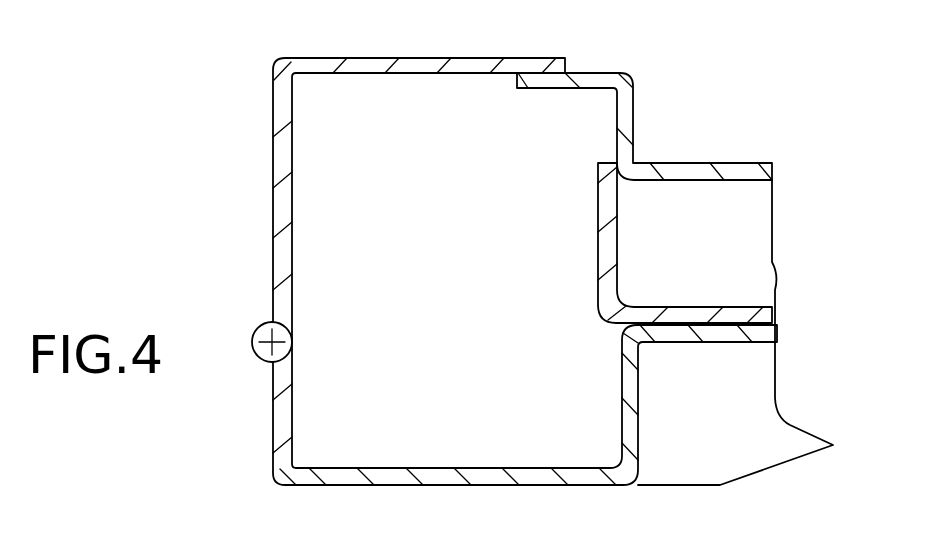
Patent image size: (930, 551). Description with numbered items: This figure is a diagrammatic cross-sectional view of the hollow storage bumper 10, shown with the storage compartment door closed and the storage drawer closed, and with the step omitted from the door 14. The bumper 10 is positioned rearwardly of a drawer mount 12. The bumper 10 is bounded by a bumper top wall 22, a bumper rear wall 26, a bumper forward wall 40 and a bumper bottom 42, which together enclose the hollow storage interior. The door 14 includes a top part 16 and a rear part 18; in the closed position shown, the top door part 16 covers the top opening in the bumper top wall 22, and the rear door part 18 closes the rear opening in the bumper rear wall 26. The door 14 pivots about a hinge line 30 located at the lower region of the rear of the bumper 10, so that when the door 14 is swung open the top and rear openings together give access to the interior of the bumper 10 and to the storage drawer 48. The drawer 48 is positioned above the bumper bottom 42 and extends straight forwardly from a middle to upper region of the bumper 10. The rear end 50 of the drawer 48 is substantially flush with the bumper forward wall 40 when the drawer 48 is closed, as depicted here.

The hollow storage bumper 10 is at (276, 510).
The drawer mount 12 is at (687, 163).
The door 14 is at (266, 131).
The top part 16 is at (423, 63).
The rear part 18 is at (290, 186).
The bumper top wall 22 is at (605, 73).
The bumper rear wall 26 is at (278, 430).
The hinge line 30 is at (268, 367).
The bumper forward wall 40 is at (630, 103).
The bumper bottom 42 is at (473, 487).
The storage drawer 48 is at (583, 211).
The rear end 50 is at (598, 287).